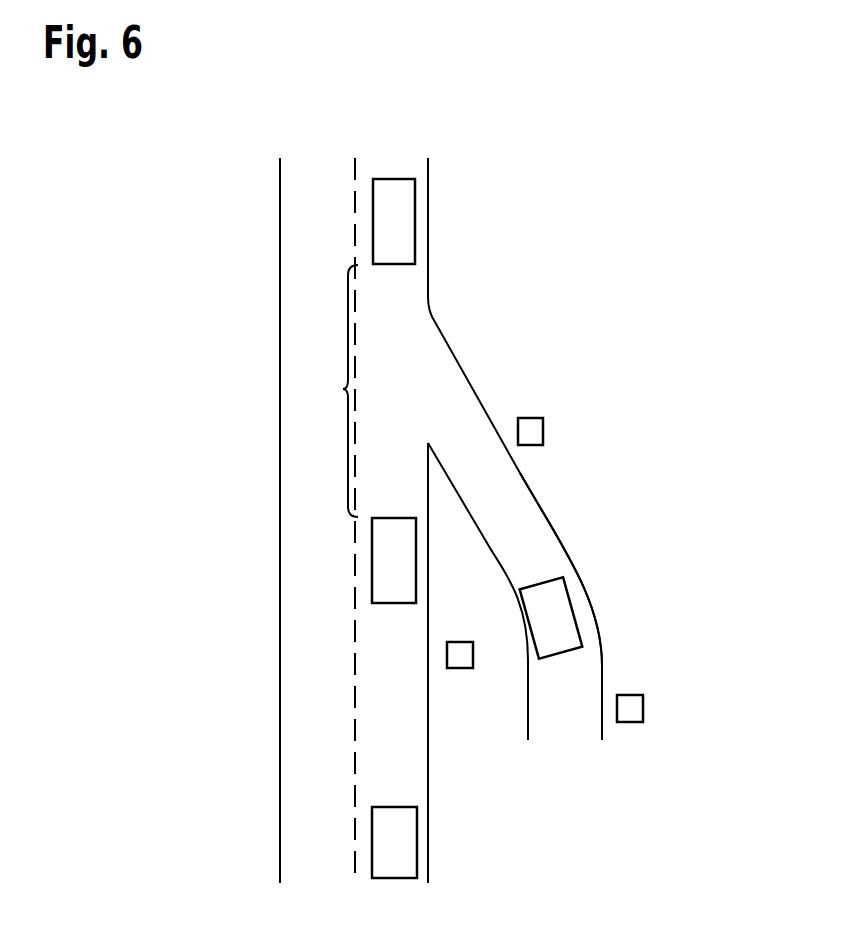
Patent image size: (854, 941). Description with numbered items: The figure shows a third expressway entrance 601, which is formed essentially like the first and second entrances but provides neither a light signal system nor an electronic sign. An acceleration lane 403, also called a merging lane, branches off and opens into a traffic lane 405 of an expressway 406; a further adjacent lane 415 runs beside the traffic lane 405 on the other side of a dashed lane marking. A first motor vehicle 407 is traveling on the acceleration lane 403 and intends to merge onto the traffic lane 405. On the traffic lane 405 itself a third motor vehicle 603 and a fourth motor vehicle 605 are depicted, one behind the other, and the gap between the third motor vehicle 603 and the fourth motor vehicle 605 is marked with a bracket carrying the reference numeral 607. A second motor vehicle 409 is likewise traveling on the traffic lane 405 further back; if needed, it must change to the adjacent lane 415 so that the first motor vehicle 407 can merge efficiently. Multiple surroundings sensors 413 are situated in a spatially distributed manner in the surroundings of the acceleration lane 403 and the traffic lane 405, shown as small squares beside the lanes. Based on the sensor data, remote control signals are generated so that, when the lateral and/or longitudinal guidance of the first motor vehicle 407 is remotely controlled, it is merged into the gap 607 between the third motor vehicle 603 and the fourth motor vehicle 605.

The acceleration lane 403 is at (530, 537).
The traffic lane 405 is at (395, 773).
The expressway 406 is at (200, 330).
The first motor vehicle 407 is at (573, 612).
The second motor vehicle 409 is at (417, 842).
The surroundings sensors 413 is at (543, 432).
The adjacent lane 415 is at (320, 640).
The third expressway entrance 601 is at (497, 318).
The third motor vehicle 603 is at (372, 558).
The fourth motor vehicle 605 is at (373, 218).
The gap 607 is at (345, 389).